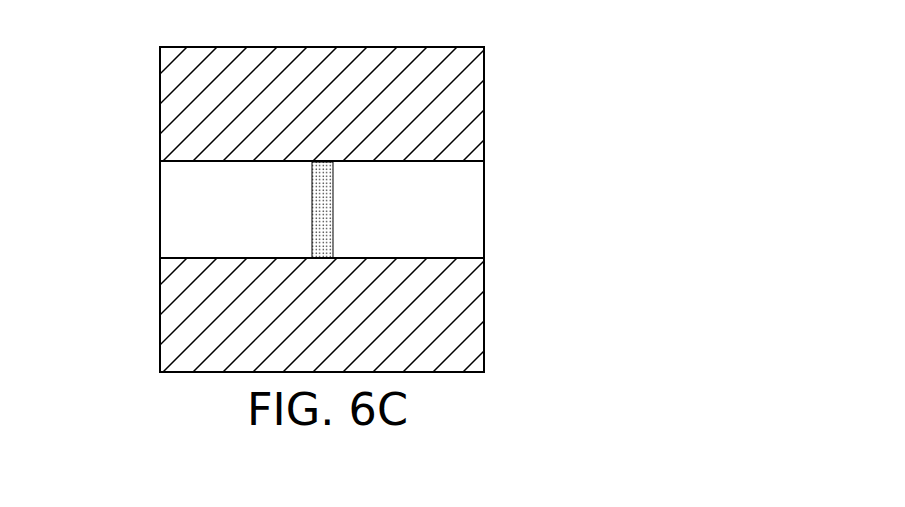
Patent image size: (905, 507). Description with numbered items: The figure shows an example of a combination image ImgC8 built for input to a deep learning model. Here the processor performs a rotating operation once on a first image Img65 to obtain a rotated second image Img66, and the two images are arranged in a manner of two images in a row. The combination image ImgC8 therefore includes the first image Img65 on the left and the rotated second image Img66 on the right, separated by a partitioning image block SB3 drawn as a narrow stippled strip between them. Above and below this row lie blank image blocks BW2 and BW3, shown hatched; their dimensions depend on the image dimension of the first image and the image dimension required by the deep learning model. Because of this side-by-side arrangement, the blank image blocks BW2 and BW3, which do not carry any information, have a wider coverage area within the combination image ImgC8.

The combination image ImgC8 is at (437, 47).
The blank image block BW2 is at (467, 105).
The blank image block BW3 is at (465, 337).
The partitioning image block SB3 is at (333, 193).
The first image Img65 is at (182, 210).
The second image Img66 is at (463, 233).